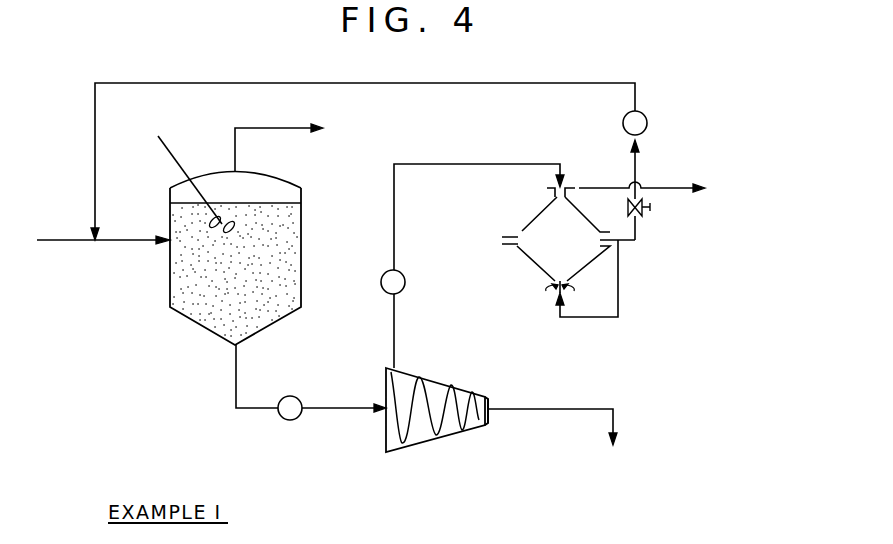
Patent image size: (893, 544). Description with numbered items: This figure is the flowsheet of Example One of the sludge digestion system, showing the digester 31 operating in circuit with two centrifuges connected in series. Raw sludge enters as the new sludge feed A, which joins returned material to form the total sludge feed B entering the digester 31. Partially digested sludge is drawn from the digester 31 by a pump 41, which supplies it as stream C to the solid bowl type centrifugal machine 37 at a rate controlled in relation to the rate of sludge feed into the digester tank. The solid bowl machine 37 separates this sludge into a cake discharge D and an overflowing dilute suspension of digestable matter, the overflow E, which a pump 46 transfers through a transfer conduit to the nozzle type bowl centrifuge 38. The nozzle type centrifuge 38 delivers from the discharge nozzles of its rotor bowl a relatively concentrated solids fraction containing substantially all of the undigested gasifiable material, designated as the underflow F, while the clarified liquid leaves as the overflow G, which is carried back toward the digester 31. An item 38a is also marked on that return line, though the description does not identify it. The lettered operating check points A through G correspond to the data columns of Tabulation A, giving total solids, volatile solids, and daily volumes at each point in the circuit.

The digester 31 is at (301, 279).
The pump 41 is at (289, 396).
The solid bowl type centrifugal machine 37 is at (427, 442).
The pump 46 is at (405, 285).
The nozzle type bowl centrifuge 38 is at (522, 230).
The pump on recycle line 38a is at (647, 124).
The new sludge feed to digester A is at (62, 240).
The total sludge feed to digester B is at (118, 243).
The digester sludge into first centrifuge C is at (236, 388).
The cake discharge from first centrifuge D is at (525, 409).
The overflow from first centrifuge E is at (394, 347).
The underflow from second centrifuge F is at (667, 188).
The overflow from second centrifuge G is at (634, 166).